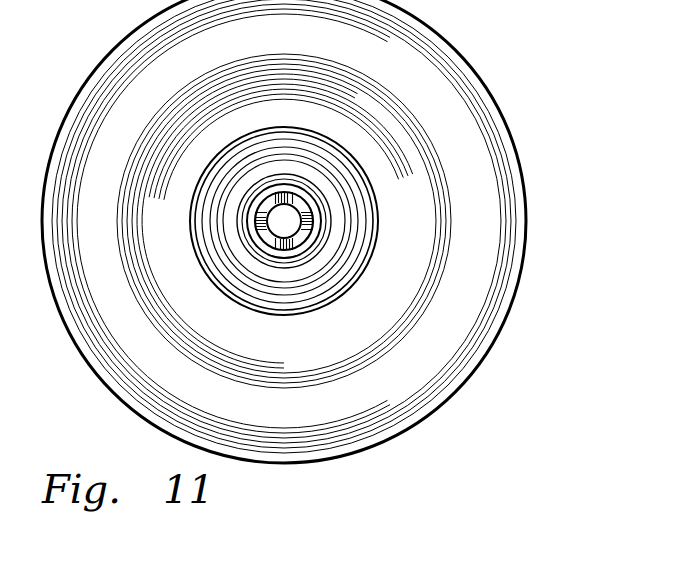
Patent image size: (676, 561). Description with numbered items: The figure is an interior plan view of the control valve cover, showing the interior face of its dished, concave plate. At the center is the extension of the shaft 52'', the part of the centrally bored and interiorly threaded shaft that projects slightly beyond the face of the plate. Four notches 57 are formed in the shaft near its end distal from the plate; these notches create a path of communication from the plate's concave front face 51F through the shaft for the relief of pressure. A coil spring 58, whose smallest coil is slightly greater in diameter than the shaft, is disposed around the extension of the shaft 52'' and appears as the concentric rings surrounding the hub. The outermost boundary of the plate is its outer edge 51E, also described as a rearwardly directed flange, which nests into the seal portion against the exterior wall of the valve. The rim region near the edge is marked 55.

The outer edge 51E is at (497, 337).
The front face 51F is at (311, 358).
The extension of the shaft 52'' is at (327, 209).
The outer rim grooves 55 is at (448, 397).
The notches 57 is at (256, 220).
The coil spring 58 is at (222, 288).